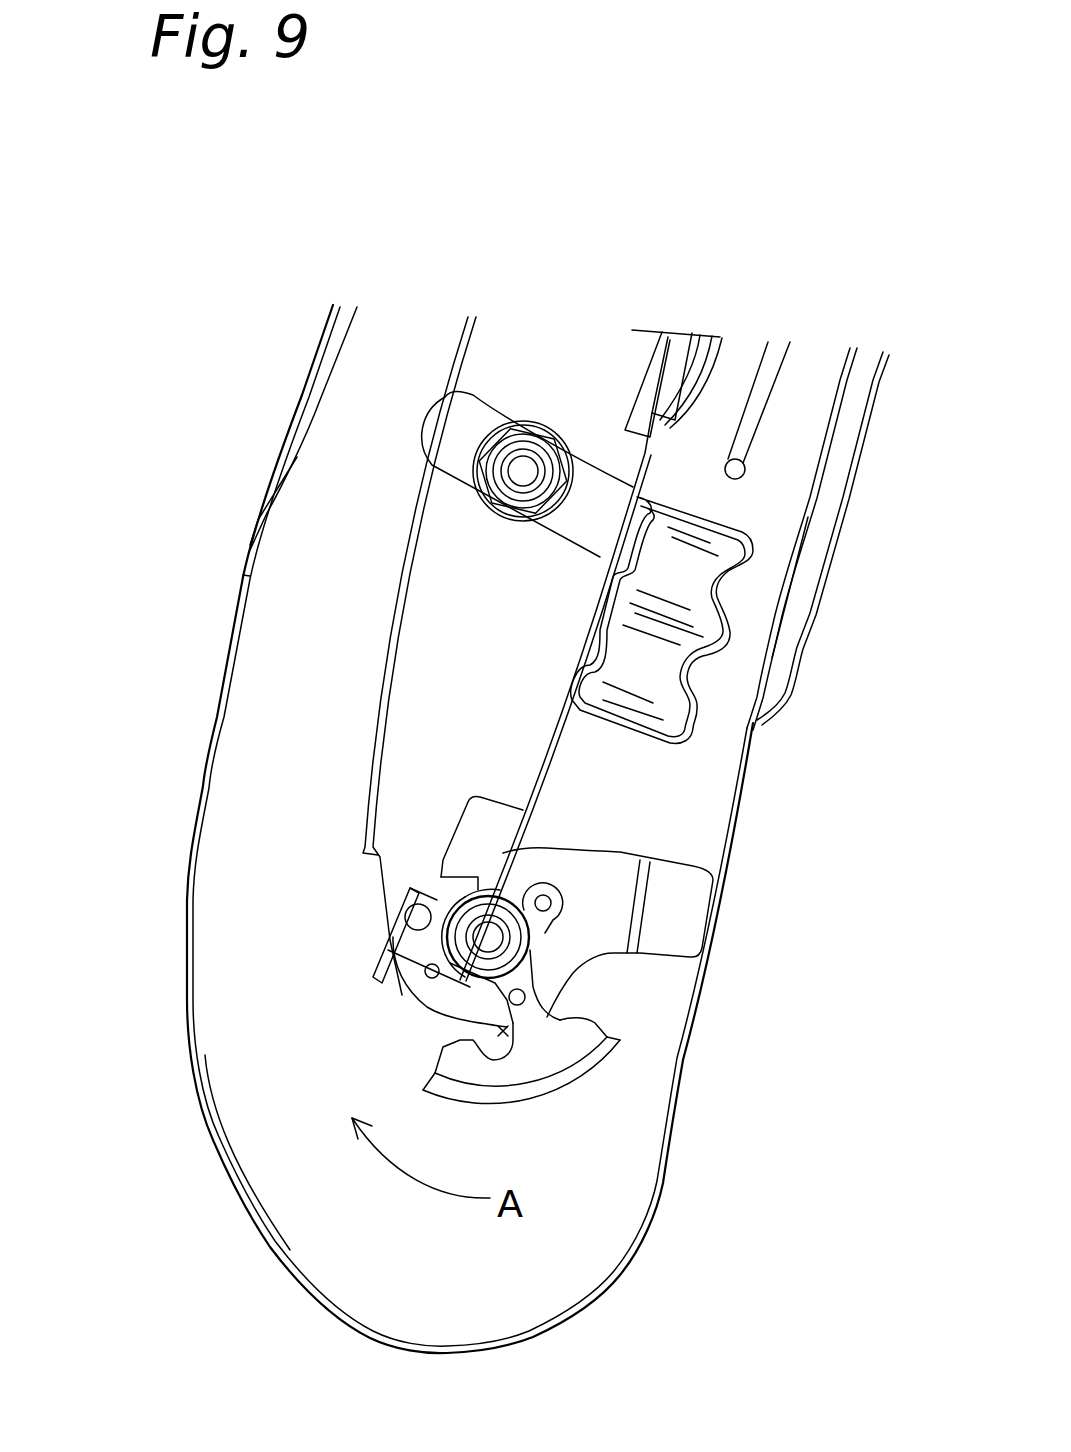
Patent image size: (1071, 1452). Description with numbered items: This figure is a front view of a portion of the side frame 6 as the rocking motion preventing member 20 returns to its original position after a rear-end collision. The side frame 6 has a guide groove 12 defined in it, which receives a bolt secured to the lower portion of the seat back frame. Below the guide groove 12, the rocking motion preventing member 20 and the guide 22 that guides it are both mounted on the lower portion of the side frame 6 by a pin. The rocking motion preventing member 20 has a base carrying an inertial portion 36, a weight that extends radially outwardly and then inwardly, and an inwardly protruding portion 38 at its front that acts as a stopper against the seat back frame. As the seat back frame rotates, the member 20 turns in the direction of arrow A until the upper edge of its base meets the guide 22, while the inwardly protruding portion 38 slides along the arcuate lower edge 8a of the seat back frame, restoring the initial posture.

The side frame 6 is at (203, 786).
The guide groove 12 is at (473, 413).
The arcuate lower edge 8a is at (388, 922).
The inwardly protruding portion 38 is at (413, 1005).
The guide 22 is at (607, 873).
The inertial portion 36 is at (575, 1072).
The rocking motion preventing member 20 is at (605, 1022).